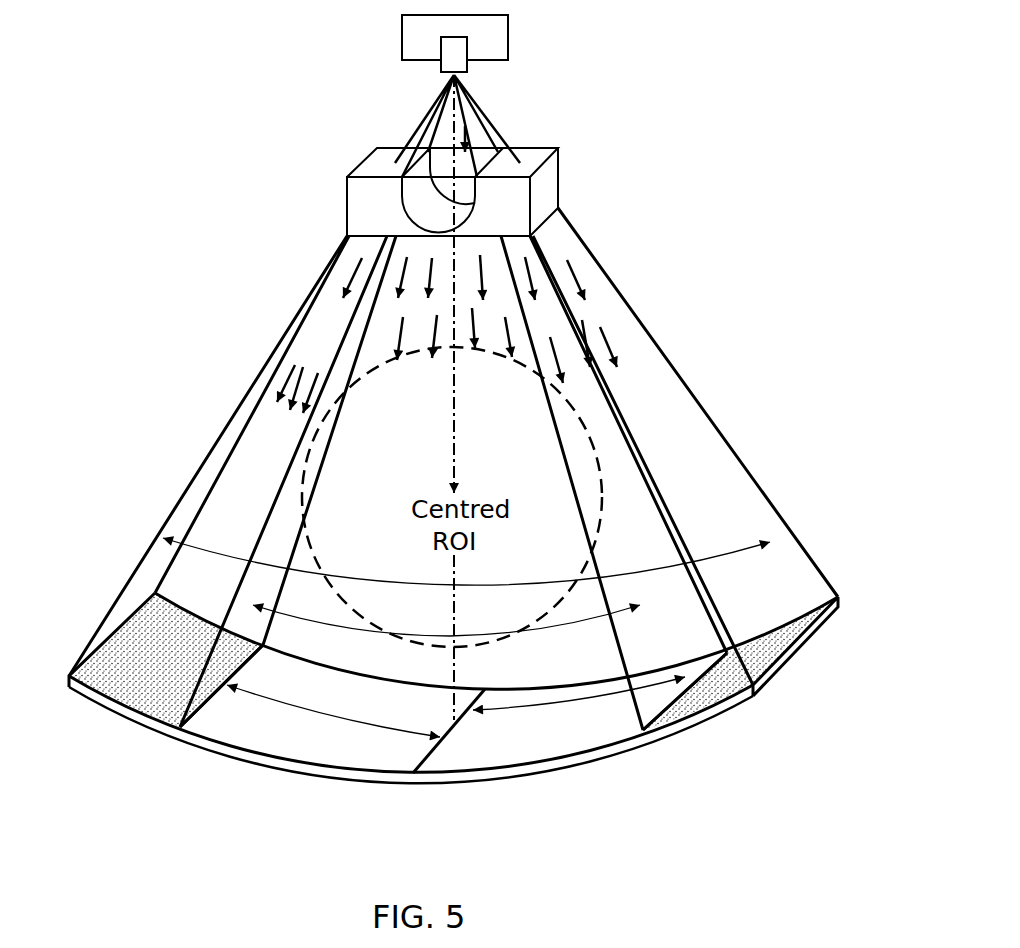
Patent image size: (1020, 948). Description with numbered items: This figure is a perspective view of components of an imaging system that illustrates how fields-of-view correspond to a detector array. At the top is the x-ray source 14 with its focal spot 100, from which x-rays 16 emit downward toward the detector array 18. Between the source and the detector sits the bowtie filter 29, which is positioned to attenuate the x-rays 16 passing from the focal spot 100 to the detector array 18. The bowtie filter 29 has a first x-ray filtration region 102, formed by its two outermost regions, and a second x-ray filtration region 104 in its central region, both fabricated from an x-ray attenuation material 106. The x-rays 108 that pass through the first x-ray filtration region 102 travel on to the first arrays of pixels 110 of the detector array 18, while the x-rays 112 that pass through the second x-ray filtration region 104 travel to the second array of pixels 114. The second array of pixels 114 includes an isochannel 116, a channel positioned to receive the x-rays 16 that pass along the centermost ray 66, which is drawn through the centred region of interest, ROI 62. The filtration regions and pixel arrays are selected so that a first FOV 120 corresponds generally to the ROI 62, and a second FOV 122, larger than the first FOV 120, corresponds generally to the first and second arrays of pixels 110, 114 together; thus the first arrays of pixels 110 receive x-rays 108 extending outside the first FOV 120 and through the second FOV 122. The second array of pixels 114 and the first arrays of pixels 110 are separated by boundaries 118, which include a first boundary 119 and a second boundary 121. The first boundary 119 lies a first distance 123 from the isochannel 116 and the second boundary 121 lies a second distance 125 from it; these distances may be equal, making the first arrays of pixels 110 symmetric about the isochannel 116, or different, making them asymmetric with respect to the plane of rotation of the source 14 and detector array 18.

The x-ray source 14 is at (492, 41).
The focal spot 100 is at (463, 80).
The second x-ray filtration region 104 is at (466, 128).
The first x-ray filtration region 102 is at (393, 145).
The bowtie filter 29 is at (547, 187).
The x-ray attenuation material 106 is at (513, 202).
The x-rays 16 is at (343, 273).
The ROI 62 is at (587, 437).
The x-rays passing through first x-ray filtration region 108 is at (310, 360).
The x-rays passing through second x-ray filtration region 112 is at (430, 285).
The centermost ray 66 is at (458, 437).
The detector array 18 is at (830, 545).
The second array of pixels 114 is at (517, 743).
The first arrays of pixels 110 is at (132, 688).
The isochannel 116 is at (438, 760).
The boundaries 118 is at (205, 708).
The first boundary 119 is at (232, 706).
The second boundary 121 is at (665, 728).
The second FOV 122 is at (670, 565).
The first FOV 120 is at (327, 620).
The first distance 123 is at (313, 733).
The second distance 125 is at (562, 706).